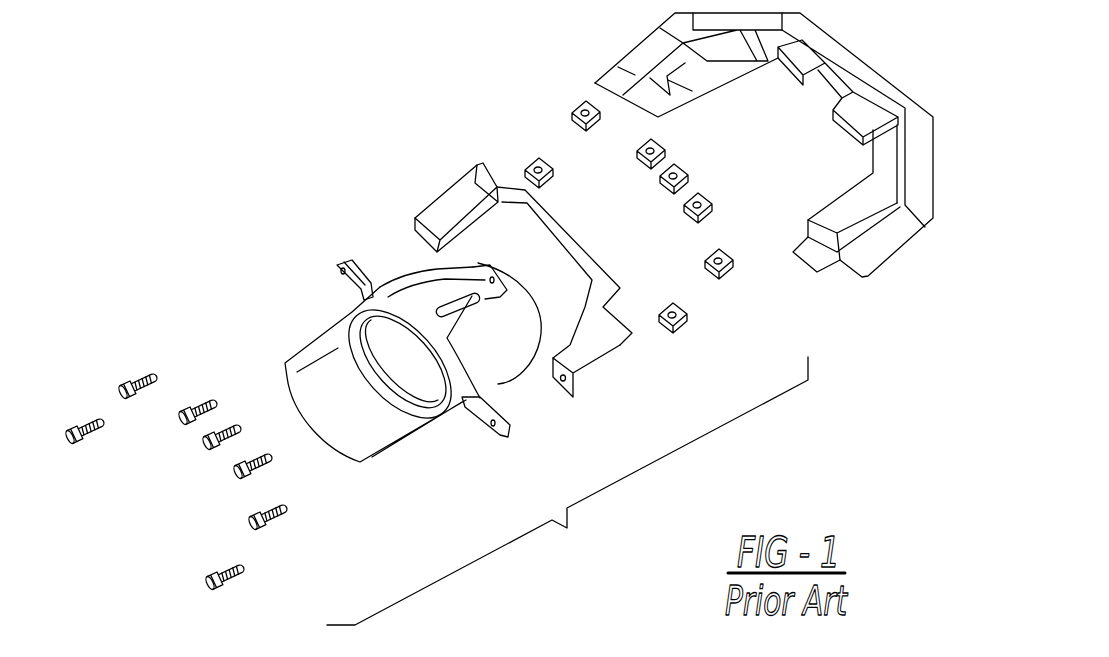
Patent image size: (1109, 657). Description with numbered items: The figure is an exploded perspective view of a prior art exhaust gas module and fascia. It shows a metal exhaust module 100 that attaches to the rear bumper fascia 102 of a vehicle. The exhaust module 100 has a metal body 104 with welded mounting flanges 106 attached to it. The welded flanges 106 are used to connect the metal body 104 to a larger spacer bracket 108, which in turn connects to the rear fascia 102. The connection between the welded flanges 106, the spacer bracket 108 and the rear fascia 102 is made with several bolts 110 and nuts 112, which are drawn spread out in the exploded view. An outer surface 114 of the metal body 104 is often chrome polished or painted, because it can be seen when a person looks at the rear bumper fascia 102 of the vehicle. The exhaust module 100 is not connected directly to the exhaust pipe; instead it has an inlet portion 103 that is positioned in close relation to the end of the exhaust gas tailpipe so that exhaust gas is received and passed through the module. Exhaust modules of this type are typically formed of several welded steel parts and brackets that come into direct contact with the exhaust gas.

The exhaust module 100 is at (567, 491).
The rear bumper fascia 102 is at (877, 69).
The inlet portion 103 is at (350, 406).
The metal body 104 is at (532, 354).
The welded mounting flanges 106 is at (347, 260).
The spacer bracket 108 is at (593, 349).
The bolts 110 is at (163, 327).
The nuts 112 is at (570, 88).
The outer surface 114 is at (450, 266).